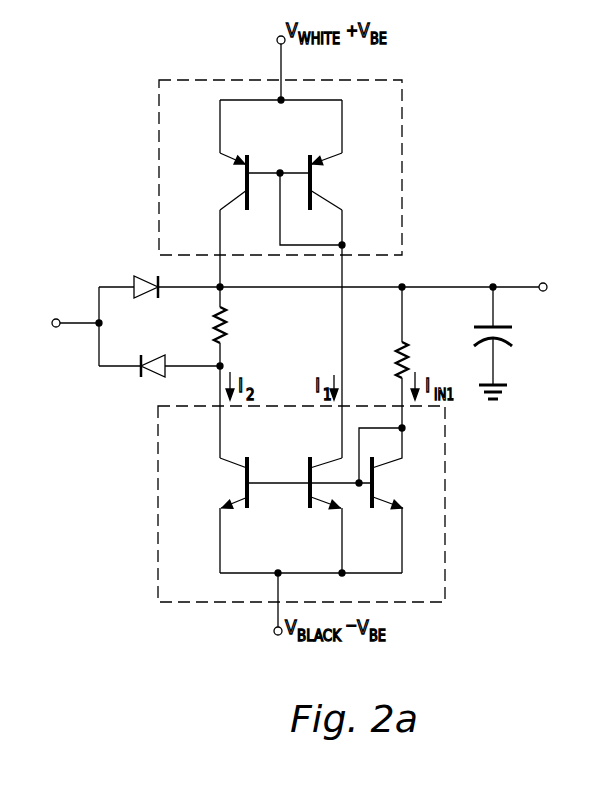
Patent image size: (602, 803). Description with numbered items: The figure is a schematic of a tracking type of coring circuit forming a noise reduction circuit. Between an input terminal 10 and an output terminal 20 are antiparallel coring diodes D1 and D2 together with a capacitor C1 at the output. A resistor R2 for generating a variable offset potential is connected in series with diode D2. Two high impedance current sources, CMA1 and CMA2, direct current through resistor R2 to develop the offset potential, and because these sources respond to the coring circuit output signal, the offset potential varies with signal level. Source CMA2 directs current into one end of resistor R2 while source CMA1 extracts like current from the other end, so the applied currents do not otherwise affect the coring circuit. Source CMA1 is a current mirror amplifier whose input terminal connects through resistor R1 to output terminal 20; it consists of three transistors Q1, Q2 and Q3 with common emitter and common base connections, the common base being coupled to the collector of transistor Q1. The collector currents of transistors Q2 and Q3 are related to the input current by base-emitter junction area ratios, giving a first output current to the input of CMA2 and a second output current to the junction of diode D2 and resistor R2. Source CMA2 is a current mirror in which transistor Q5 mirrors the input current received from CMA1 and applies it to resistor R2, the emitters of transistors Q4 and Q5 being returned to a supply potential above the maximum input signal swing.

The input terminal 10 is at (57, 327).
The output terminal 20 is at (544, 291).
The coring diode D1 is at (159, 303).
The coring diode D2 is at (159, 380).
The resistor R1 is at (411, 357).
The resistor R2 is at (232, 336).
The capacitor C1 is at (502, 343).
The transistor Q1 is at (387, 468).
The transistor Q2 is at (322, 497).
The transistor Q3 is at (232, 482).
The transistor Q4 is at (327, 181).
The transistor Q5 is at (231, 181).
The current source CMA1 is at (301, 504).
The current source CMA2 is at (280, 269).